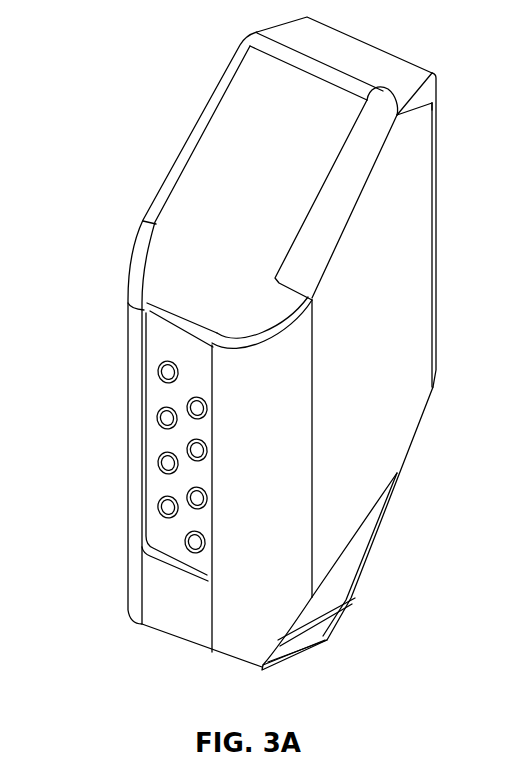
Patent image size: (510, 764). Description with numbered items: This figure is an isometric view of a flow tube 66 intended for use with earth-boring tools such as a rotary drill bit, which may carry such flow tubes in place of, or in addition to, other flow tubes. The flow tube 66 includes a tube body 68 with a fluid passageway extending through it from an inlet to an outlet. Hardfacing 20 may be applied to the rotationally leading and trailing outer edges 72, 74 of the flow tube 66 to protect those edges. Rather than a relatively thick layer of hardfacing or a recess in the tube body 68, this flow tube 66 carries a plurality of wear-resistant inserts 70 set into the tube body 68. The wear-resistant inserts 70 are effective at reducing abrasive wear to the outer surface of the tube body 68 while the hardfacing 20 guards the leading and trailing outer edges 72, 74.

The flow tube 66 is at (282, 343).
The tube body 68 is at (402, 186).
The wear-resistant inserts 70 is at (161, 413).
The rotationally leading outer edge 72 is at (142, 278).
The rotationally trailing outer edge 74 is at (243, 307).
The hardfacing 20 is at (135, 483).